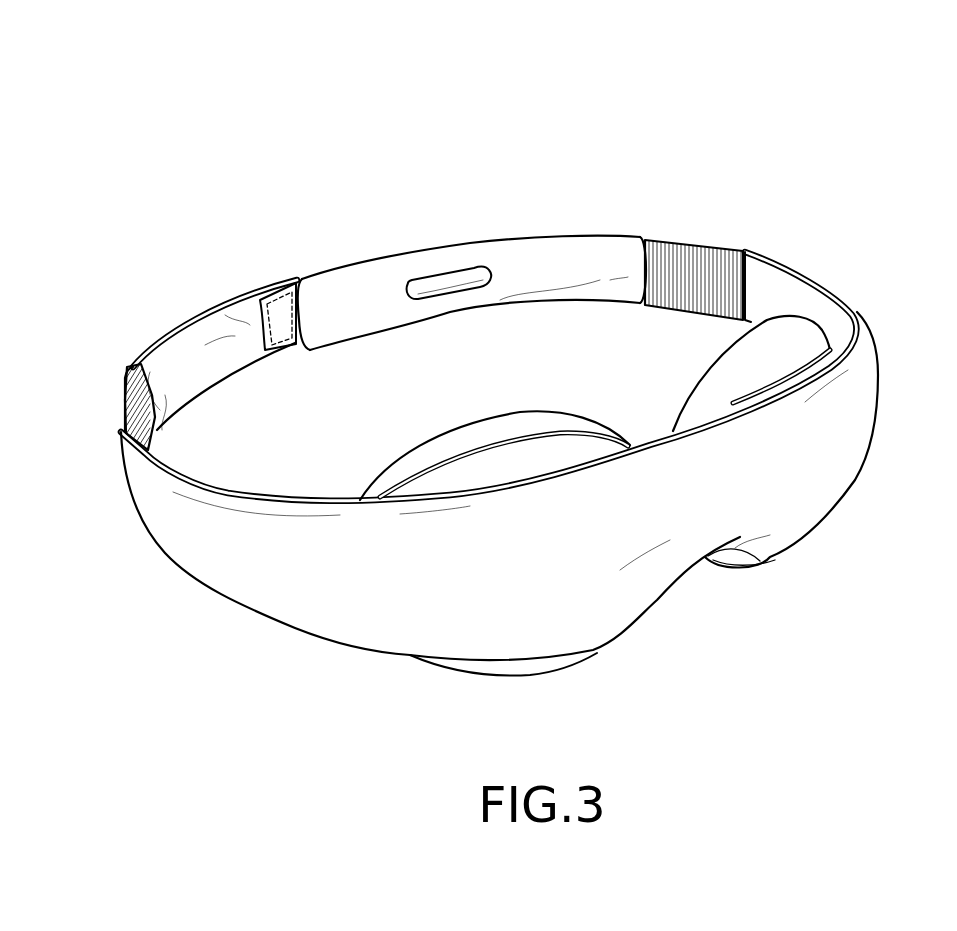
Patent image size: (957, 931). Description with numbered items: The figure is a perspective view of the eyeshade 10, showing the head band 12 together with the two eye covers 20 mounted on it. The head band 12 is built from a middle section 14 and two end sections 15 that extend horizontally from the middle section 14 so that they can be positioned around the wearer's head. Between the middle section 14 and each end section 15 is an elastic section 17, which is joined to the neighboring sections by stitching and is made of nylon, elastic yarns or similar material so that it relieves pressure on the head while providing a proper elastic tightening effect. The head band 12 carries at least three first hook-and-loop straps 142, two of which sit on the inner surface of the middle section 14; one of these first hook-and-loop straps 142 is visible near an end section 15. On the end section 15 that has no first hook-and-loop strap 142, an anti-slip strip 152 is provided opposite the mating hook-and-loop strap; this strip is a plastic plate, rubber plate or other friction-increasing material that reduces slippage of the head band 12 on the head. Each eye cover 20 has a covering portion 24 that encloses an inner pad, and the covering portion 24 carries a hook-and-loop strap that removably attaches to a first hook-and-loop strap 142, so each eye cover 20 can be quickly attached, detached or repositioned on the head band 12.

The eyeshade 10 is at (437, 69).
The head band 12 is at (818, 222).
The middle section 14 is at (648, 430).
The end section 15 is at (403, 247).
The elastic section 17 is at (707, 263).
The eye cover 20 is at (388, 452).
The covering portion 24 is at (491, 432).
The first hook-and-loop strap 142 is at (284, 310).
The anti-slip strip 152 is at (446, 283).